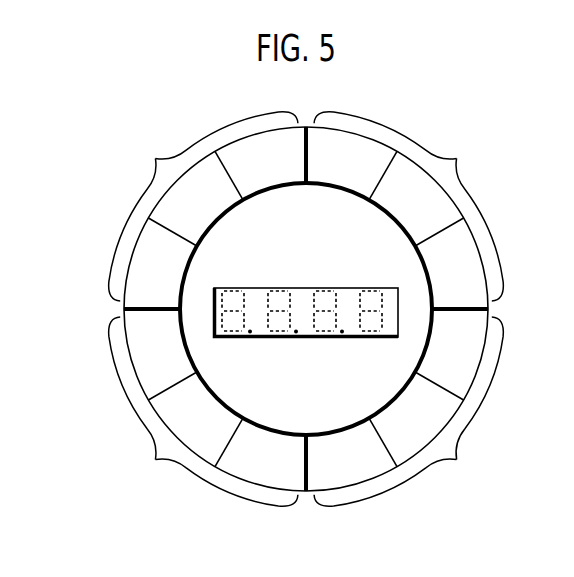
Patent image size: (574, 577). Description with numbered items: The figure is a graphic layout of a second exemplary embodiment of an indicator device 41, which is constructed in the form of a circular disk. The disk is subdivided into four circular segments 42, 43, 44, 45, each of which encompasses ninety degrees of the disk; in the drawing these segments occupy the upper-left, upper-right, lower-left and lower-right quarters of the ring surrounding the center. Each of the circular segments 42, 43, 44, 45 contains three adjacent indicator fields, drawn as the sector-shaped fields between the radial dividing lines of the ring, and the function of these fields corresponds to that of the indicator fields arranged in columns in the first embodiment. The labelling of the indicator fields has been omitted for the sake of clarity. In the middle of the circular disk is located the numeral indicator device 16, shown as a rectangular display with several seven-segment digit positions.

The indicator device 41 is at (104, 240).
The circular segment 42 is at (203, 206).
The circular segment 43 is at (408, 206).
The circular segment 44 is at (203, 411).
The circular segment 45 is at (408, 411).
The numeral indicator device 16 is at (300, 322).